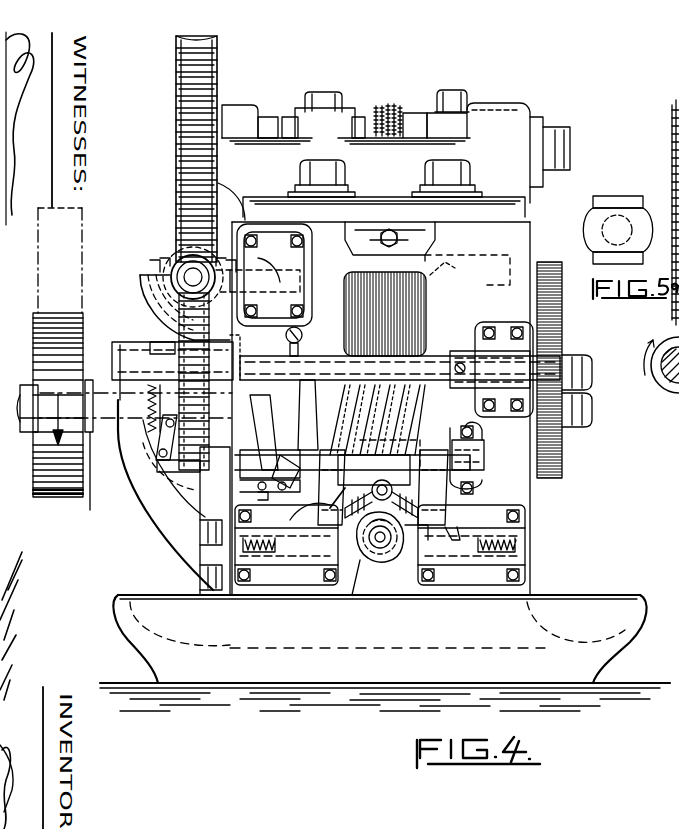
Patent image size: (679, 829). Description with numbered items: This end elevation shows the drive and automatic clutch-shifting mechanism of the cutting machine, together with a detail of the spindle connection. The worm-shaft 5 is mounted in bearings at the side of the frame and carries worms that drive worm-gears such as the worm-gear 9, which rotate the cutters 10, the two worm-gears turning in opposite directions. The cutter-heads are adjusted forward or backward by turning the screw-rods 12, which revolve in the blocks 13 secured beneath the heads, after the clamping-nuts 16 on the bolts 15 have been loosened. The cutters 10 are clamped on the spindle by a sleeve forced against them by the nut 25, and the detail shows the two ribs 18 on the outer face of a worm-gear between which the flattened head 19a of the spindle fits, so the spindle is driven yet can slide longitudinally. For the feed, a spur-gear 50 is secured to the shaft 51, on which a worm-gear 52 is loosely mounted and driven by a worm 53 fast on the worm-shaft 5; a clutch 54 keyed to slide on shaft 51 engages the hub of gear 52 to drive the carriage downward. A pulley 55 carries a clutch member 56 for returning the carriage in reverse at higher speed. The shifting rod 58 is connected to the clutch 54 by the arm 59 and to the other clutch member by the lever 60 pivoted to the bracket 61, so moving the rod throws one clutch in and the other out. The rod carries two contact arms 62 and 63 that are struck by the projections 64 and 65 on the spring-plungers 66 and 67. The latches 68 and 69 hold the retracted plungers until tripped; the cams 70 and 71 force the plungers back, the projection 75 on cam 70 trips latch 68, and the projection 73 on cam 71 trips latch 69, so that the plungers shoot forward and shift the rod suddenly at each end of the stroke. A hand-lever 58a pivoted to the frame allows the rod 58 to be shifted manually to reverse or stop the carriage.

In FIG. 5a, the worm-shaft 5 is at (672, 398).
In FIG. 4, the worm-gear 9 is at (176, 90).
In FIG. 4, the cutters 10 is at (396, 105).
In FIG. 4, the screw-rods 12 is at (389, 231).
In FIG. 4, the blocks 13 is at (437, 243).
In FIG. 4, the bolts 15 is at (455, 91).
In FIG. 4, the clamping-nuts 16 is at (466, 103).
In FIG. 5a, the ribs or projections 18 is at (612, 196).
In FIG. 5a, the flattened head 19a is at (678, 245).
In FIG. 4, the nut 25 is at (566, 135).
In FIG. 4, the spur-gear 50 is at (563, 453).
In FIG. 4, the shaft 51 is at (435, 356).
In FIG. 4, the worm-gear 52 is at (172, 336).
In FIG. 4, the worm 53 is at (166, 270).
In FIG. 4, the clutch 54 is at (246, 355).
In FIG. 4, the pulley 55 is at (74, 342).
In FIG. 4, the clutch member 56 is at (165, 467).
In FIG. 4, the rod 58 is at (448, 462).
In FIG. 4, the hand-lever 58a is at (297, 349).
In FIG. 4, the arm 59 is at (270, 447).
In FIG. 4, the lever 60 is at (178, 443).
In FIG. 4, the bracket 61 is at (225, 432).
In FIG. 4, the arm 62 is at (331, 487).
In FIG. 4, the arm 63 is at (433, 487).
In FIG. 4, the projection 64 is at (312, 503).
In FIG. 4, the projection 65 is at (462, 530).
In FIG. 4, the spring-plunger 66 is at (306, 553).
In FIG. 4, the spring-plunger 67 is at (476, 553).
In FIG. 4, the latch or dog 68 is at (256, 519).
In FIG. 4, the latch or dog 69 is at (460, 500).
In FIG. 4, the cam 70 is at (367, 560).
In FIG. 4, the cam 71 is at (378, 560).
In FIG. 4, the projection 73 is at (414, 525).
In FIG. 4, the projection 75 is at (362, 572).